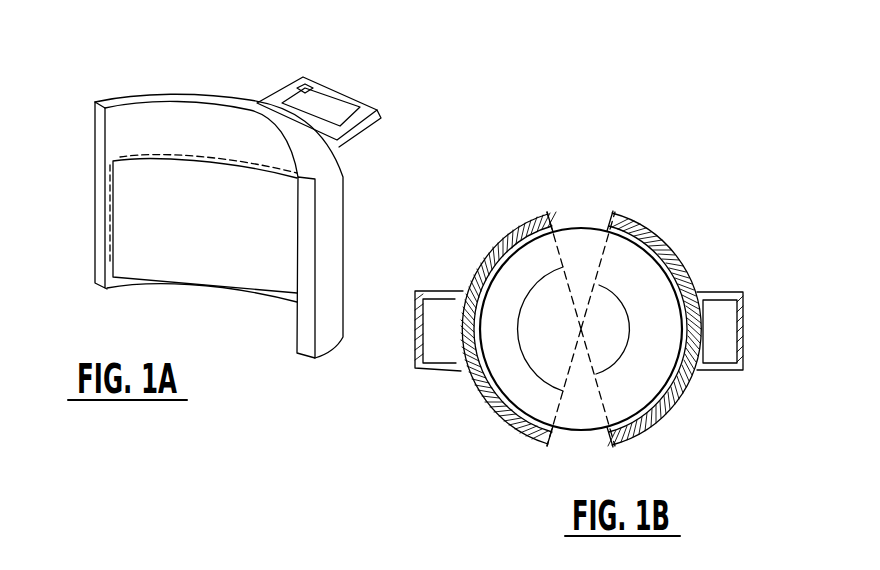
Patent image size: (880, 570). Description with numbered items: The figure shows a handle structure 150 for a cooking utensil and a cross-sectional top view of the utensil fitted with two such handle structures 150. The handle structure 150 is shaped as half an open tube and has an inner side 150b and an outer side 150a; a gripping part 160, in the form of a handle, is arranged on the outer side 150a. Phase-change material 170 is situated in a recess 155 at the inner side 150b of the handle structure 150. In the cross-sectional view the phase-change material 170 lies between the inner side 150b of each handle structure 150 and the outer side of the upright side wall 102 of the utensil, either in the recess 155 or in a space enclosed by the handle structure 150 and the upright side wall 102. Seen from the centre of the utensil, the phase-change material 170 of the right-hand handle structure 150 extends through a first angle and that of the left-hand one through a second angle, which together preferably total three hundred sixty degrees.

In FIG. 1B, the upright side wall 102 is at (577, 437).
In FIG. 1A, the handle structure 150 is at (219, 179).
In FIG. 1B, the handle structure 150 is at (438, 453).
In FIG. 1A, the outer side 150a is at (332, 193).
In FIG. 1A, the inner side 150b is at (160, 133).
In FIG. 1A, the recess 155 is at (127, 160).
In FIG. 1B, the recess 155 is at (670, 406).
In FIG. 1A, the gripping part 160 is at (347, 93).
In FIG. 1B, the gripping part 160 is at (732, 292).
In FIG. 1A, the phase-change material 170 is at (200, 273).
In FIG. 1B, the phase-change material 170 is at (633, 232).